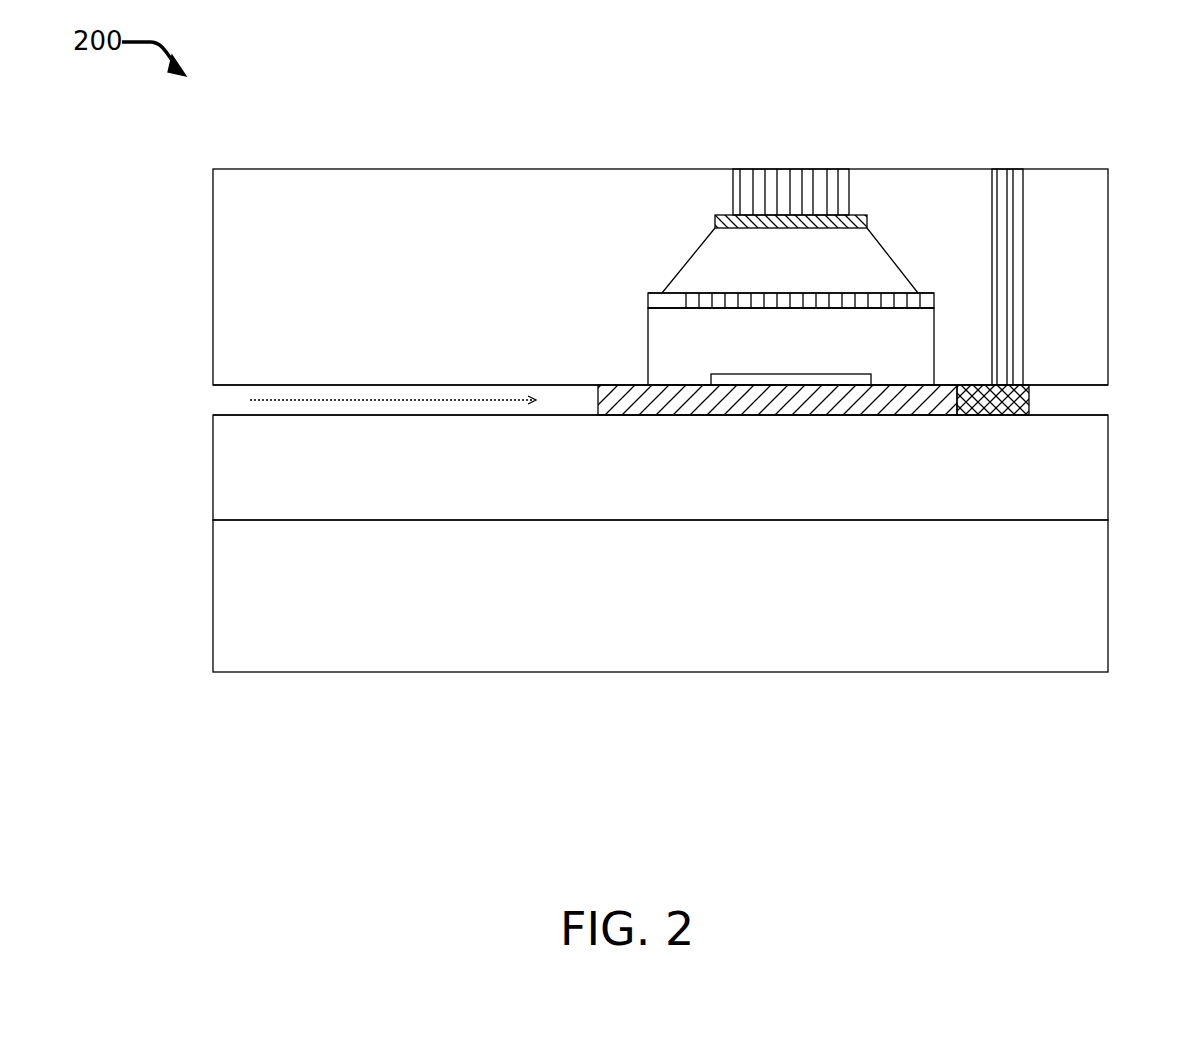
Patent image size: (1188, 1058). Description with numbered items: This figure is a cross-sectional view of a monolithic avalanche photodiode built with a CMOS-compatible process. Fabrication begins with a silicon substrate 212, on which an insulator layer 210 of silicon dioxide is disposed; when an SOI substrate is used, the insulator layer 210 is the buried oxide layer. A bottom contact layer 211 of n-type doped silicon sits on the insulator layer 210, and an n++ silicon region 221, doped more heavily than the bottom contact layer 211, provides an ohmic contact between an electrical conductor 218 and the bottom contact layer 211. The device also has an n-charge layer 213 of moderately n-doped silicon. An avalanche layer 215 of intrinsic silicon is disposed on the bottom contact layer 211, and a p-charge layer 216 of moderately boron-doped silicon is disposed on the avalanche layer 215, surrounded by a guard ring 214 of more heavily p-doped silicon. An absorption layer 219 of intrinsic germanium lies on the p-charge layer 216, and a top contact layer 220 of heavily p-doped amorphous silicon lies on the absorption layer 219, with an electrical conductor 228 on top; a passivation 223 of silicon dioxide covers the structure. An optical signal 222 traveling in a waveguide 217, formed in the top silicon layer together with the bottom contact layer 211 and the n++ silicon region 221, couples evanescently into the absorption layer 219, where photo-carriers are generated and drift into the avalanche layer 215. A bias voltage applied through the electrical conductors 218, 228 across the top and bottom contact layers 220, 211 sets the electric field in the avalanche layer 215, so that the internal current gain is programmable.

The insulator layer 210 is at (247, 476).
The bottom contact layer 211 is at (890, 404).
The silicon substrate 212 is at (266, 568).
The n-charge layer 213 is at (820, 381).
The guard ring 214 is at (647, 306).
The avalanche layer 215 is at (663, 346).
The p-charge layer 216 is at (808, 304).
The waveguide 217 is at (210, 385).
The electrical conductor 218 is at (992, 185).
The absorption layer 219 is at (698, 262).
The top contact layer 220 is at (715, 222).
The n++ silicon region 221 is at (992, 408).
The optical signal 222 is at (381, 403).
The passivation 223 is at (253, 290).
The electrical conductor 228 is at (735, 192).